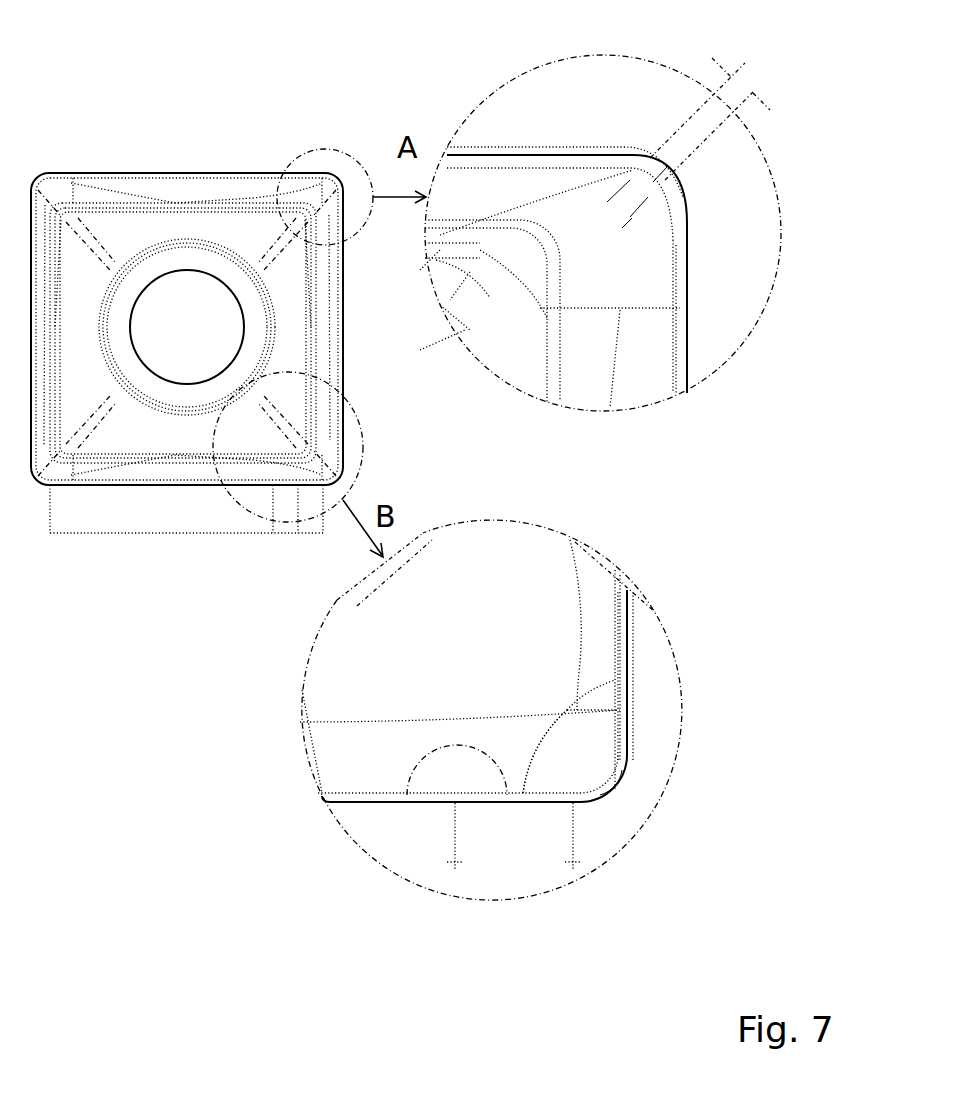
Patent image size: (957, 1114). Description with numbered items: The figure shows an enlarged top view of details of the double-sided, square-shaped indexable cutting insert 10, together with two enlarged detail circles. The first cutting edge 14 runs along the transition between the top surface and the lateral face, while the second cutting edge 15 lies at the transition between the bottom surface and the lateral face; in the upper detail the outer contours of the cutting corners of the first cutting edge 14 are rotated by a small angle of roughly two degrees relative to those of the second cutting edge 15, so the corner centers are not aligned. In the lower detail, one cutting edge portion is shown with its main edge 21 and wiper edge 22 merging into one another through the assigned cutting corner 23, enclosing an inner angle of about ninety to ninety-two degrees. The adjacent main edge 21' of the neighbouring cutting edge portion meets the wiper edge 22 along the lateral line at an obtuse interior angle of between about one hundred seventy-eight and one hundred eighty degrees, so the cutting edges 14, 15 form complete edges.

The cutting insert 10 is at (148, 76).
The first cutting edge 14 is at (690, 276).
The second cutting edge 15 is at (577, 140).
The main edge 21 is at (675, 675).
The main edge 21' is at (350, 717).
The wiper edge 22 is at (517, 803).
The cutting corner 23 is at (615, 783).